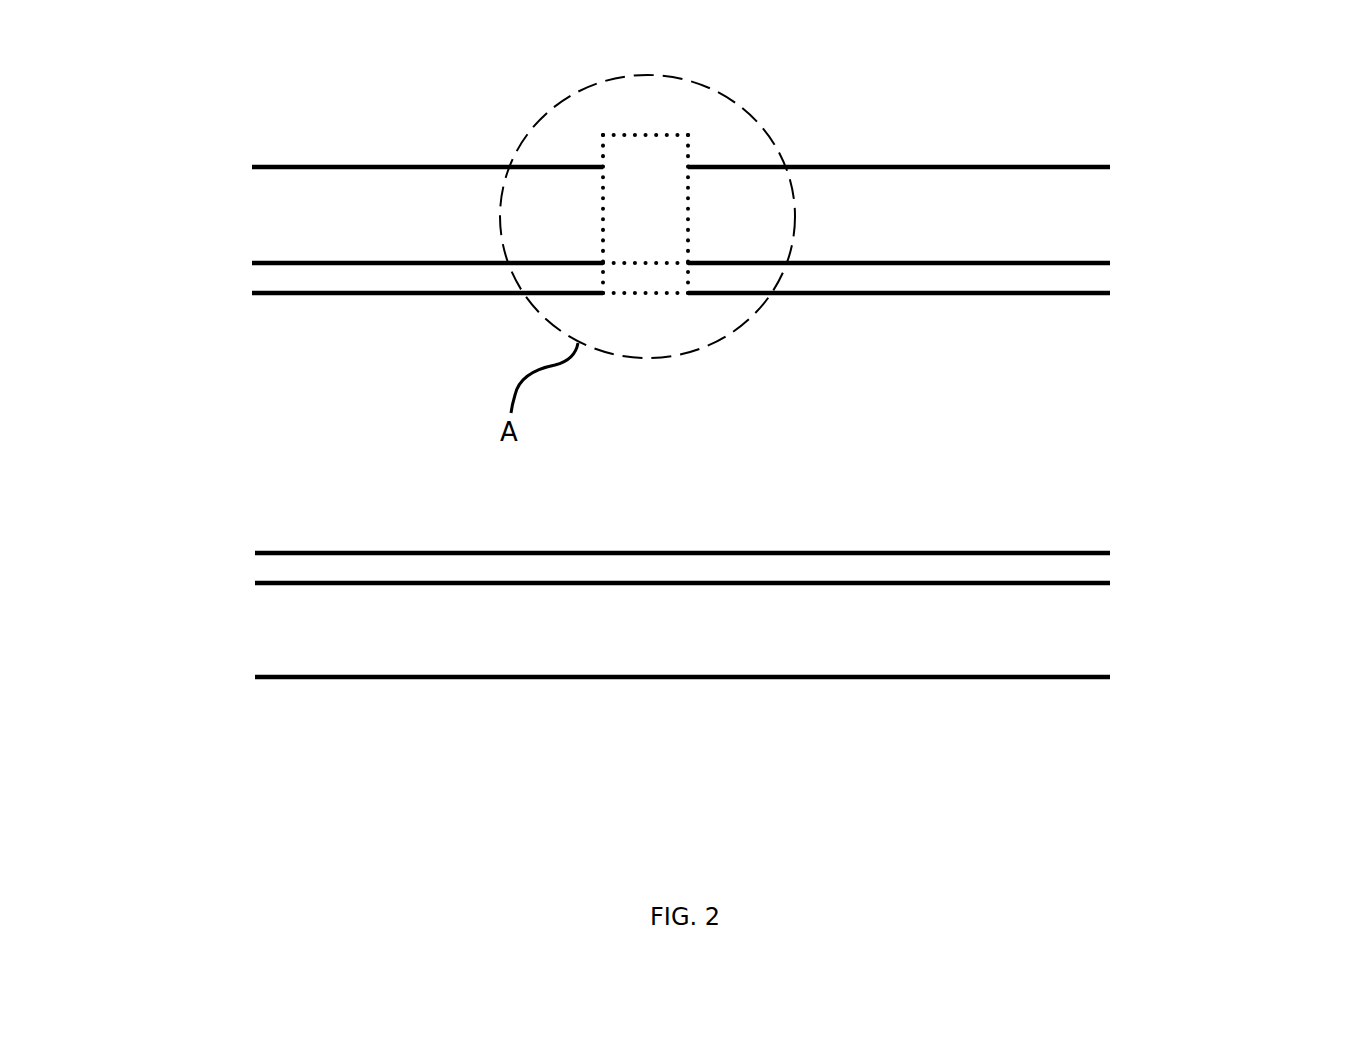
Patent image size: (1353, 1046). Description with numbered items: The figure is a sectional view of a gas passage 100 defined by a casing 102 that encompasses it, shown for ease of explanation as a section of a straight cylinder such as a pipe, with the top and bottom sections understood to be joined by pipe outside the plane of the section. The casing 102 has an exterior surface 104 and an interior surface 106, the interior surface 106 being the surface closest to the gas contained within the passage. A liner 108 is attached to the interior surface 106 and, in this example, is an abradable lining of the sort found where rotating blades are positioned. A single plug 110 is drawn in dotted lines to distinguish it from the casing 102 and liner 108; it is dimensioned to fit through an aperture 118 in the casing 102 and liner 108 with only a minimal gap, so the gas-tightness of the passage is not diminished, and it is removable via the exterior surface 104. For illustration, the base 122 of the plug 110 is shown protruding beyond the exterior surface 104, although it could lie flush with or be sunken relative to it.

The gas passage 100 is at (949, 446).
The casing 102 is at (361, 229).
The exterior surface 104 is at (1022, 167).
The interior surface 106 is at (1090, 265).
The liner 108 is at (343, 293).
The plug 110 is at (688, 205).
The aperture 118 is at (603, 218).
The base 122 is at (647, 135).